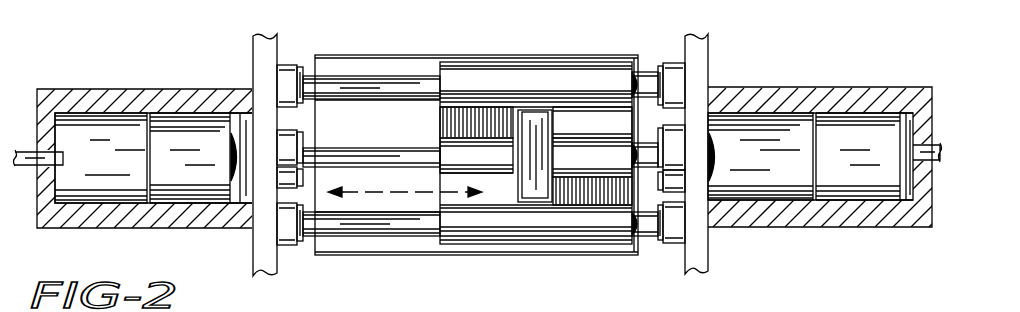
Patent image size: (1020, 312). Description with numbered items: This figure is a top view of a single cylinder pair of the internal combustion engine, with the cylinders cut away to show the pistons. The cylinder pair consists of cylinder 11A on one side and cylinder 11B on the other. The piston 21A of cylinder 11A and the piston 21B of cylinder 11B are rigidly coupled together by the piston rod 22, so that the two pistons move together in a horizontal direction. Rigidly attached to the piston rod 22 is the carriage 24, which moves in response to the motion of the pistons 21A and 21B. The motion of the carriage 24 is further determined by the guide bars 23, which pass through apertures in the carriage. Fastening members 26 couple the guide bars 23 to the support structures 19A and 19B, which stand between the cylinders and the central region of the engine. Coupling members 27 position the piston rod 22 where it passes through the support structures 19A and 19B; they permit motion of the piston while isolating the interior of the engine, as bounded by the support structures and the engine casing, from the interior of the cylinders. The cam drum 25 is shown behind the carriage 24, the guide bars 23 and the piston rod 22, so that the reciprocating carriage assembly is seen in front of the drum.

The cylinder 11A is at (157, 230).
The cylinder 11B is at (830, 228).
The support structure 19A is at (268, 46).
The support structure 19B is at (700, 47).
The piston 21A is at (180, 125).
The piston 21B is at (870, 120).
The piston rod 22 is at (412, 135).
The guide bars 23 is at (343, 78).
The carriage 24 is at (562, 68).
The cam drum 25 is at (432, 250).
The fastening members 26 is at (293, 66).
The coupling members 27 is at (310, 150).